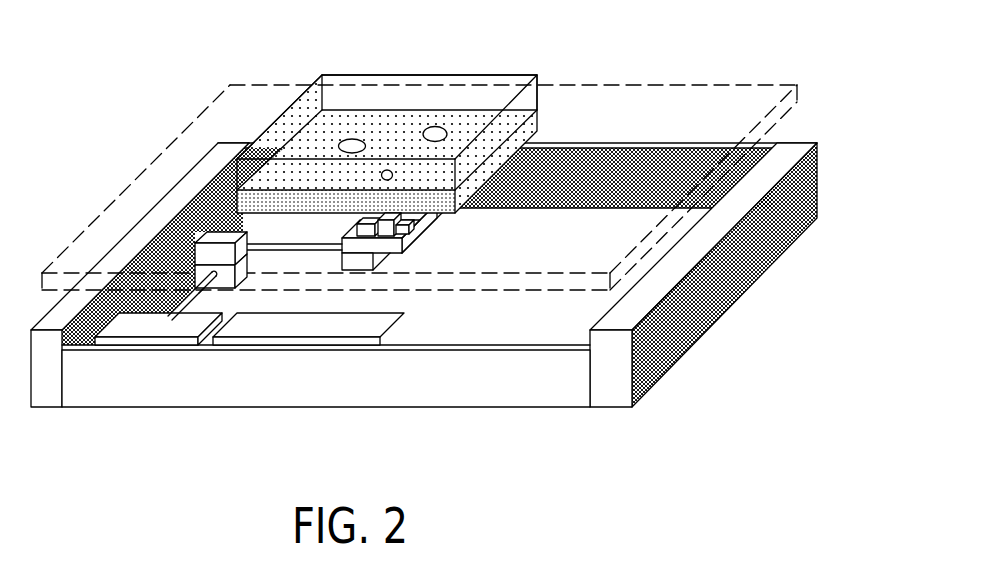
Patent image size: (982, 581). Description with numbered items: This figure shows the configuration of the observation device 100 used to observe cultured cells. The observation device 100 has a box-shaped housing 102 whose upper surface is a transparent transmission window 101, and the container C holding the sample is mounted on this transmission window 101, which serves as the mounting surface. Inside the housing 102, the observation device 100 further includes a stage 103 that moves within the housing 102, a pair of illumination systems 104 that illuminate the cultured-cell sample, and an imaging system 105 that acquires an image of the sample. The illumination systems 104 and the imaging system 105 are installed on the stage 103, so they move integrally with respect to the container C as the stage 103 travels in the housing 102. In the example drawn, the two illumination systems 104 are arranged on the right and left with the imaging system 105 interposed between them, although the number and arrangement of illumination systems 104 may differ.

The observation device 100 is at (464, 210).
The transmission window 101 is at (672, 90).
The housing 102 is at (818, 194).
The stage 103 is at (394, 255).
The illumination systems 104 is at (355, 223).
The imaging system 105 is at (385, 211).
The container C is at (444, 66).